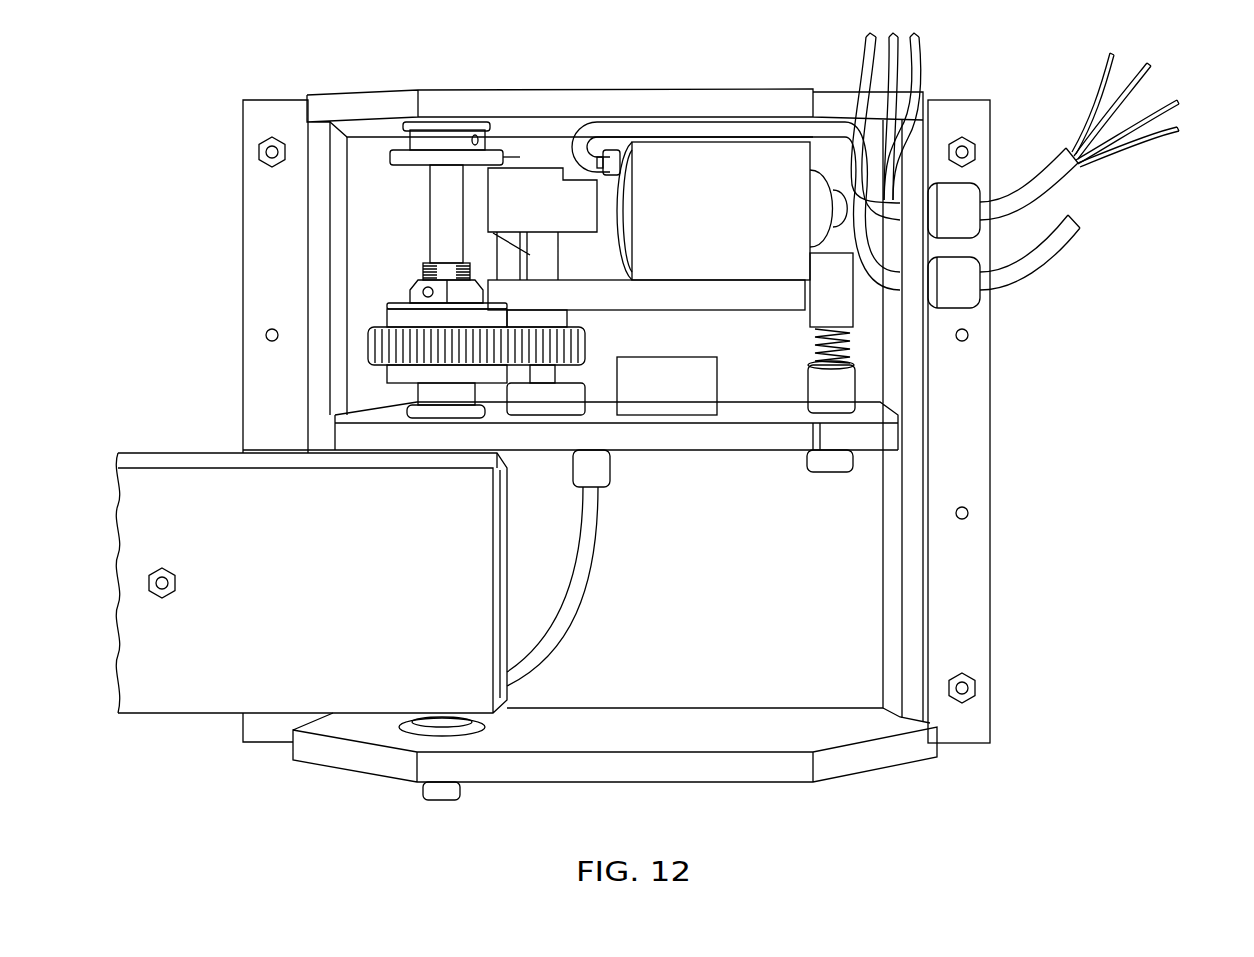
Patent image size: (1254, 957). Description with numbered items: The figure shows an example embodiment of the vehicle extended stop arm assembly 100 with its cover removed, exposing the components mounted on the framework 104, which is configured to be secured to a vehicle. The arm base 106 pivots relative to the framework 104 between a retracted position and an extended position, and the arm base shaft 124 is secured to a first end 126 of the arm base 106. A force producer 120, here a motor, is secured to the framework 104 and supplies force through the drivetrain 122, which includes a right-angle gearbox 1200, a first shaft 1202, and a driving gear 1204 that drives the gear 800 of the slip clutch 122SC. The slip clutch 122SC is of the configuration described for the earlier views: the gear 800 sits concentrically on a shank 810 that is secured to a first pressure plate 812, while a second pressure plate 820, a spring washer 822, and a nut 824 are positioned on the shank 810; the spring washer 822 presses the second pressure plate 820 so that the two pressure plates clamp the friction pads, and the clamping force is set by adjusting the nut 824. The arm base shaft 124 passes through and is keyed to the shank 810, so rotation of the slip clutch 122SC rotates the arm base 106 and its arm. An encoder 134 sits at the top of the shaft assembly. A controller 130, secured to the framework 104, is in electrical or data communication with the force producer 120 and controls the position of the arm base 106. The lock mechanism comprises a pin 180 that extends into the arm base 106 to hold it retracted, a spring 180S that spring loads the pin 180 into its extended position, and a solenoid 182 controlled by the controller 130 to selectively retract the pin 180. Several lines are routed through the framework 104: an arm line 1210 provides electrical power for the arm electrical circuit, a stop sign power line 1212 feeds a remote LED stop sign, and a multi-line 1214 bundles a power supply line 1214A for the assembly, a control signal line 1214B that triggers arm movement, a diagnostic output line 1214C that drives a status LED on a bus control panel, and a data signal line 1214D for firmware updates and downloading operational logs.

The vehicle extended stop arm assembly 100 is at (157, 132).
The framework 104 is at (770, 603).
The arm base 106 is at (252, 598).
The first end of the arm base 126 is at (480, 598).
The force producer 120 is at (764, 212).
The drivetrain 122 is at (509, 144).
The slip clutch 122SC is at (397, 387).
The arm base shaft 124 is at (430, 203).
The controller 130 is at (688, 400).
The encoder 134 is at (389, 158).
The pin 180 is at (832, 460).
The spring 180S is at (813, 352).
The solenoid 182 is at (833, 293).
The gear 800 is at (368, 345).
The shank 810 is at (423, 268).
The first pressure plate 812 is at (387, 375).
The second pressure plate 820 is at (387, 318).
The spring washer 822 is at (387, 306).
The nut 824 is at (410, 292).
The right-angle gearbox 1200 is at (548, 197).
The first shaft 1202 is at (598, 318).
The driving gear 1204 is at (587, 347).
The arm line 1210 is at (572, 620).
The stop sign power line 1212 is at (1050, 257).
The multi-line 1214 is at (1070, 181).
The power supply line 1214A is at (1152, 133).
The control signal line 1214B is at (1158, 98).
The diagnostic output line 1214C is at (1127, 85).
The data signal line 1214D is at (1113, 85).